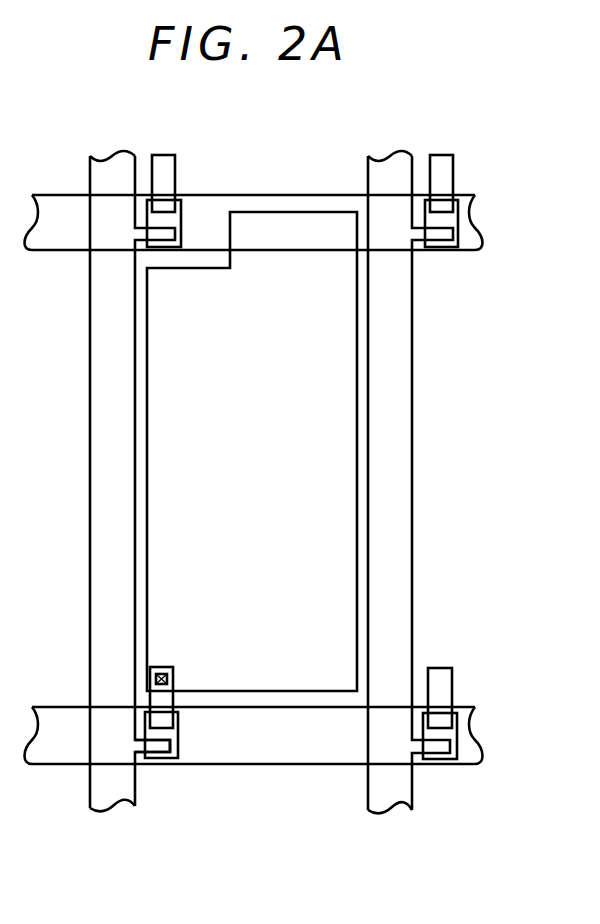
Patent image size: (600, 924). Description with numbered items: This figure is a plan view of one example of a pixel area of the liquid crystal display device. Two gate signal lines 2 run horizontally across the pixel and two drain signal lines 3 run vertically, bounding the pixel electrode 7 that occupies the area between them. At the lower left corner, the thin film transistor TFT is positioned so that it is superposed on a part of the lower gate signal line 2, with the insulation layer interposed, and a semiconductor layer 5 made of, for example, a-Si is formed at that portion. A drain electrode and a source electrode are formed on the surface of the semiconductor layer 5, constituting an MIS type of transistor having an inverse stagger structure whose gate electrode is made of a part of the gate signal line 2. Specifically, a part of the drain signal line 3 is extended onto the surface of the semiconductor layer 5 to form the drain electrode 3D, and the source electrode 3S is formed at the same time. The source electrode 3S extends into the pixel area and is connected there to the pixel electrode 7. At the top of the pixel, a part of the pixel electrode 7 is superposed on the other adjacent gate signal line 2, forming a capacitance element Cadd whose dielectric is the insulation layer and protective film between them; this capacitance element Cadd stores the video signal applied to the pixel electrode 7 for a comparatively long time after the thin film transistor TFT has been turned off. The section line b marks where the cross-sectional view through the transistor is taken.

The gate signal line 2 is at (477, 220).
The drain signal line 3 is at (110, 812).
The pixel electrode 7 is at (357, 443).
The semiconductor layer 5 is at (178, 737).
The source electrode 3S is at (173, 720).
The drain electrode 3D is at (153, 766).
The thin film transistor TFT is at (165, 772).
The capacitance element Cadd is at (275, 200).
The section line b- b is at (164, 748).